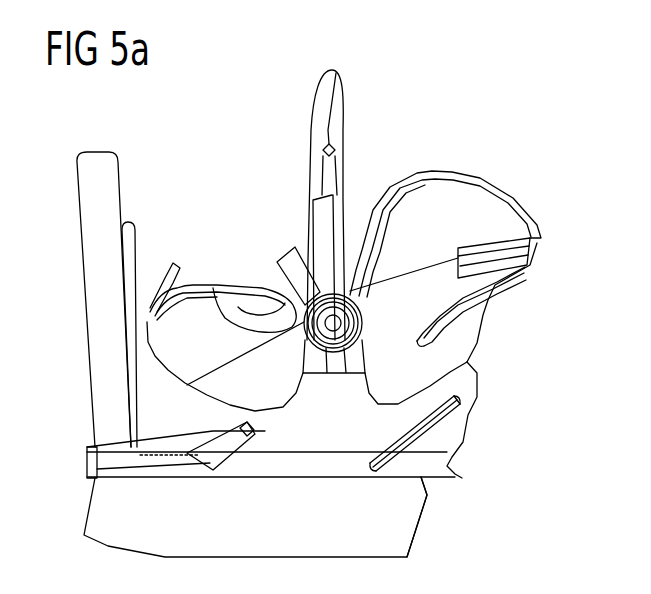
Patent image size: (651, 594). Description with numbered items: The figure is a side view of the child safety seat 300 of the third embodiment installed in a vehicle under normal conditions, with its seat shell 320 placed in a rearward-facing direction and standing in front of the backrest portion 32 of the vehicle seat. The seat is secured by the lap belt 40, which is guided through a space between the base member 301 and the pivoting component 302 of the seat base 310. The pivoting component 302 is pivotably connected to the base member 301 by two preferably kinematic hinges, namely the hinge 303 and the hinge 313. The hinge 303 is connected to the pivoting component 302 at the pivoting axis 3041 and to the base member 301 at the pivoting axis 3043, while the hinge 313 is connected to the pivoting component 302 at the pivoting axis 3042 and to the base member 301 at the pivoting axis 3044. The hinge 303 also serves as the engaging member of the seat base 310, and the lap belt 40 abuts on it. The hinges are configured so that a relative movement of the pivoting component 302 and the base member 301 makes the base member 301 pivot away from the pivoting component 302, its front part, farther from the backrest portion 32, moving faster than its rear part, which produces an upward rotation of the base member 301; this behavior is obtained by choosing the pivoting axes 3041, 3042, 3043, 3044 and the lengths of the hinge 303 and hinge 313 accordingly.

The backrest portion 32 is at (105, 327).
The lap belt 40 is at (108, 455).
The child safety seat 300 is at (482, 162).
The base member 301 is at (471, 364).
The pivoting component 302 is at (445, 478).
The hinge (engaging member) 303 is at (213, 424).
The seat base 310 is at (475, 423).
The hinge 313 is at (412, 434).
The seat shell 320 is at (243, 197).
The pivoting axis 3041 is at (213, 481).
The pivoting axis 3042 is at (382, 483).
The pivoting axis 3043 is at (248, 478).
The pivoting axis 3044 is at (463, 400).